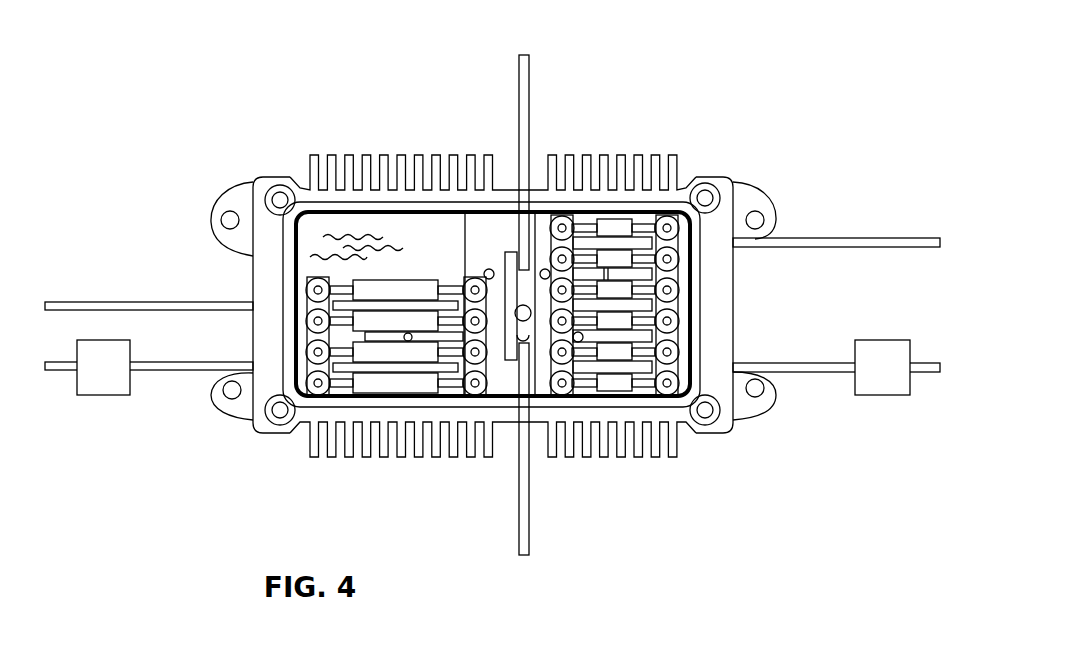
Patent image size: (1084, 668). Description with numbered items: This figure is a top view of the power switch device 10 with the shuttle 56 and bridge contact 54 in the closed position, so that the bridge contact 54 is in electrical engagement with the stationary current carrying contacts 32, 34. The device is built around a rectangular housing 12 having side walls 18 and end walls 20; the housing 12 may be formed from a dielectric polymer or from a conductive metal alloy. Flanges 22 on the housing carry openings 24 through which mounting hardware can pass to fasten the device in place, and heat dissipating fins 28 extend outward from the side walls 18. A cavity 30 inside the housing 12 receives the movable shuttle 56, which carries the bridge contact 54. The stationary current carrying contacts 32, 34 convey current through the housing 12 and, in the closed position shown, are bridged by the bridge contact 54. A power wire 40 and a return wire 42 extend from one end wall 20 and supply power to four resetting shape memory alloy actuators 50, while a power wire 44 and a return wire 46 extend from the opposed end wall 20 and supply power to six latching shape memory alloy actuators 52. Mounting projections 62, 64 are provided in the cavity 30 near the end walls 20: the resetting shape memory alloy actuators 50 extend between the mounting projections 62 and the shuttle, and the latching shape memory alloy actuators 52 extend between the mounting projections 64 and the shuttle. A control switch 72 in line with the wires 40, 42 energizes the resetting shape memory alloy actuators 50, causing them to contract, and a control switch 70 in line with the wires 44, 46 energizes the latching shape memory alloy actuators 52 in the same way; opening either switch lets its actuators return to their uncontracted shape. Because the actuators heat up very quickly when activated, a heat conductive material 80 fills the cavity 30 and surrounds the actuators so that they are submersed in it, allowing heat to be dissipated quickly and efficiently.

The power switch device 10 is at (728, 68).
The housing 12 is at (672, 176).
The side walls 18 is at (540, 205).
The end walls 20 is at (306, 290).
The flanges 22 is at (762, 205).
The openings 24 is at (238, 212).
The heat dissipating fins 28 is at (402, 155).
The cavity 30 is at (358, 230).
The stationary current carrying contact 32 is at (530, 85).
The stationary current carrying contact 34 is at (530, 540).
The power wire 40 is at (175, 372).
The return wire 42 is at (105, 302).
The power wire 44 is at (795, 363).
The return wire 46 is at (823, 238).
The resetting shape memory alloy actuators 50 is at (368, 357).
The latching shape memory alloy actuators 52 is at (625, 293).
The bridge contact 54 is at (503, 262).
The shuttle 56 is at (499, 228).
The mounting projections 62 is at (310, 345).
The mounting projections 64 is at (675, 273).
The control switch 70 is at (893, 340).
The control switch 72 is at (90, 388).
The heat conductive material 80 is at (322, 218).